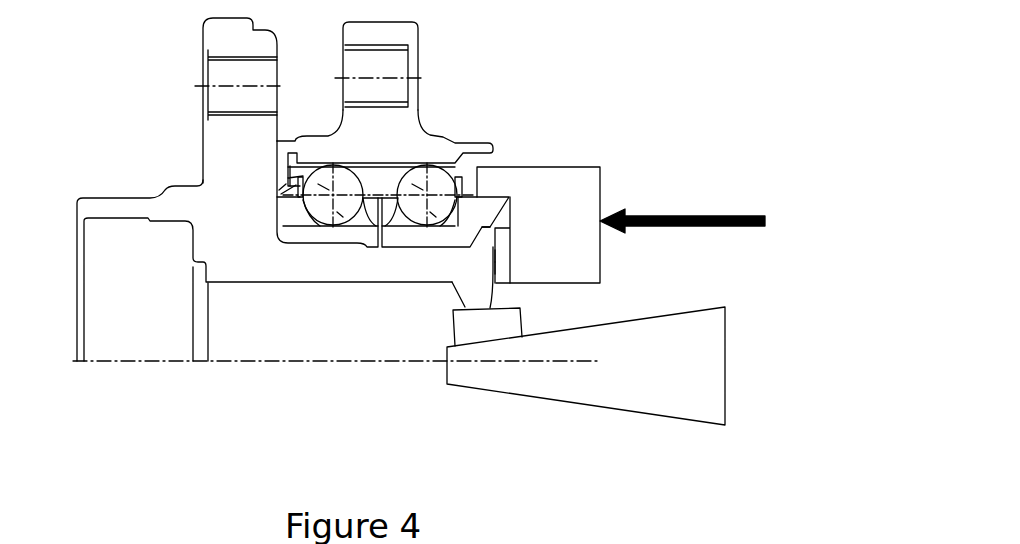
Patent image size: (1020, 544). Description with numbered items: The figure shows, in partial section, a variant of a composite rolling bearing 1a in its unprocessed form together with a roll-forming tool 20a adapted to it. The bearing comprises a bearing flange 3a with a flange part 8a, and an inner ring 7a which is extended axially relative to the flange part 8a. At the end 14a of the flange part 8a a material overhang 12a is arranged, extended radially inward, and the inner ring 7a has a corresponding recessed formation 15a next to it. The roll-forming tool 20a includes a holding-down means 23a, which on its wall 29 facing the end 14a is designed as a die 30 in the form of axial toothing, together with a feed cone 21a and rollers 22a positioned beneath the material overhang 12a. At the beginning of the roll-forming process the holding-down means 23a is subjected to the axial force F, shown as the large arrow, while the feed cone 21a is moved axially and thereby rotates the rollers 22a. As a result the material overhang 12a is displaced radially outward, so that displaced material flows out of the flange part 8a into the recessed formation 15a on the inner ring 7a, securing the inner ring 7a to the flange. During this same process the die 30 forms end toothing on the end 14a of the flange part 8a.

The composite rolling bearing 1a is at (515, 57).
The bearing flange 3a is at (210, 152).
The inner ring 7a is at (405, 238).
The flange part 8a is at (298, 270).
The material overhang 12a is at (468, 300).
The end 14a is at (497, 268).
The recessed formation 15a is at (509, 197).
The roll-forming tool 20a is at (657, 175).
The feed cone 21a is at (608, 398).
The rollers 22a is at (475, 335).
The holding-down means 23a is at (587, 177).
The wall 29 is at (497, 259).
The die 30 is at (505, 263).